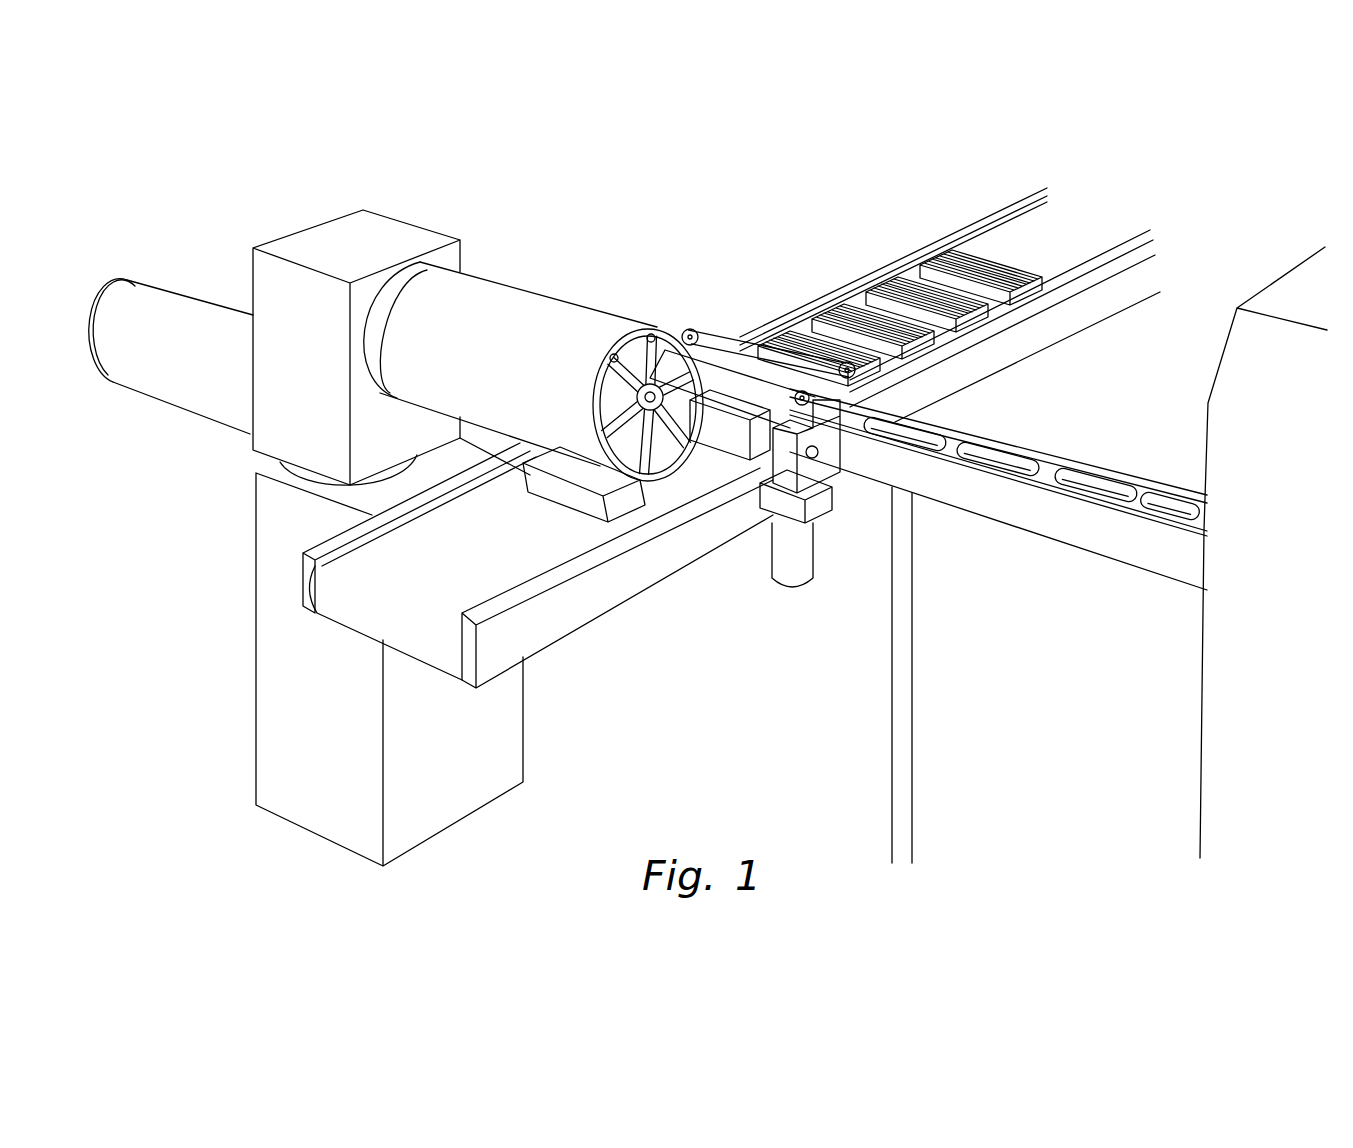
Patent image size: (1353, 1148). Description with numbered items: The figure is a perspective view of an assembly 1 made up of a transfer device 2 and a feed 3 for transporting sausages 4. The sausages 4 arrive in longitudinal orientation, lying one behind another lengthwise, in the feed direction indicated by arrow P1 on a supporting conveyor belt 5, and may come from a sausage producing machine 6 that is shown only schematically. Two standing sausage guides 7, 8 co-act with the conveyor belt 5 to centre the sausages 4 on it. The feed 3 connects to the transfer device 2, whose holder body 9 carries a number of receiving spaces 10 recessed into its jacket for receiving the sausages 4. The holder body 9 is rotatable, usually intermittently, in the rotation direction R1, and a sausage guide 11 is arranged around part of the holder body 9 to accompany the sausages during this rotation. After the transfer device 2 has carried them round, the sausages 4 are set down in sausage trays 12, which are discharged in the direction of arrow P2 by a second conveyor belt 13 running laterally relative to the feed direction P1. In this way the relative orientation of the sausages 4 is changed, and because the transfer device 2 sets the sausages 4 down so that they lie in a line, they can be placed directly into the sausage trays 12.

The assembly 1 is at (508, 172).
The transfer device 2 is at (670, 318).
The feed 3 is at (1115, 455).
The sausages 4 is at (983, 277).
The conveyor belt 5 is at (1150, 495).
The sausage producing machine 6 is at (1258, 672).
The sausage guide 7 is at (733, 385).
The sausage guide 8 is at (785, 368).
The holder body 9 is at (640, 423).
The receiving spaces 10 is at (651, 334).
The sausage guide 11 is at (541, 306).
The sausage trays 12 is at (952, 333).
The conveyor belt 13 is at (527, 563).
The feed direction P1 is at (966, 482).
The discharge direction P2 is at (520, 520).
The rotation direction R1 is at (605, 403).